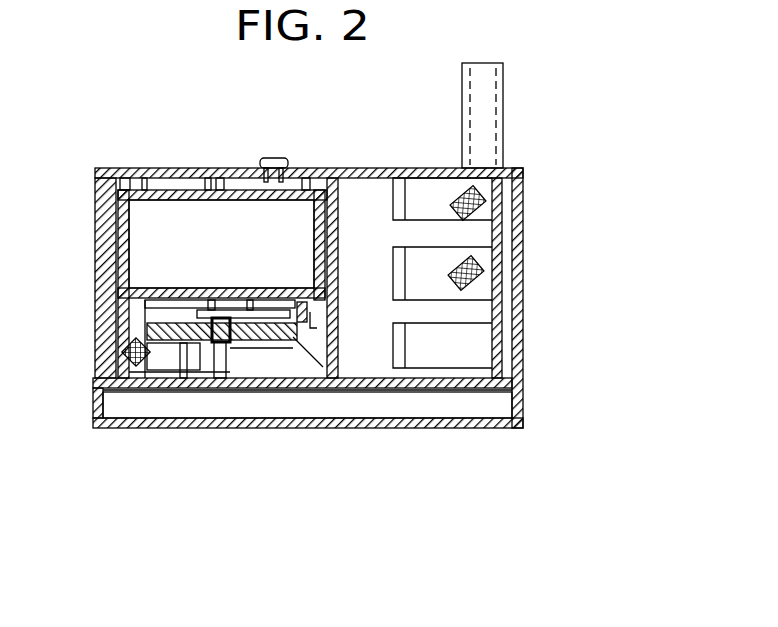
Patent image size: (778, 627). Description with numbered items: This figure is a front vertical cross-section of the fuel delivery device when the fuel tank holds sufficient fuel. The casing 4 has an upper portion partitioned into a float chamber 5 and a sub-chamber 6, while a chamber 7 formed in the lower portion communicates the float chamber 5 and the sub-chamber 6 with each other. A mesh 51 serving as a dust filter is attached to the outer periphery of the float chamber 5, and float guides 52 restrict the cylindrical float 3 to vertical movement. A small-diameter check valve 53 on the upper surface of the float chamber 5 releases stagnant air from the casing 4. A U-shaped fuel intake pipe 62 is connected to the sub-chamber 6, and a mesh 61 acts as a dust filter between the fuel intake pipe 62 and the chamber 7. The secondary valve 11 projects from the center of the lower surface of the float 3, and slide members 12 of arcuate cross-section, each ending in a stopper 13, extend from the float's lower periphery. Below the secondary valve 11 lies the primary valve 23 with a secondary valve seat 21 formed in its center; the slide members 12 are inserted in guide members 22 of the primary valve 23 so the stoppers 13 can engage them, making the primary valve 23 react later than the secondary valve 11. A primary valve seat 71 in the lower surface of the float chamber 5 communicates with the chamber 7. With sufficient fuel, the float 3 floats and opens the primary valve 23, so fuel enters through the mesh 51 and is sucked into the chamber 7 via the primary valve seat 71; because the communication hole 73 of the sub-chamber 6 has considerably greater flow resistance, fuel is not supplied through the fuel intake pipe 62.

The secondary valve 11 is at (217, 288).
The slide members 12 is at (97, 197).
The stopper 13 is at (95, 248).
The float guides 52 is at (232, 172).
The small-diameter check valve 53 is at (273, 158).
The float 3 is at (333, 205).
The fuel intake pipe 62 is at (488, 107).
The sub-chamber 6 is at (500, 163).
The mesh 61 is at (483, 205).
The casing 4 is at (523, 303).
The communication hole 73 is at (423, 377).
The chamber 7 is at (502, 407).
The primary valve seat 71 is at (262, 383).
The mesh 51 is at (93, 390).
The float chamber 5 is at (125, 333).
The secondary valve seat 21 is at (293, 338).
The guide members 22 is at (157, 380).
The primary valve 23 is at (195, 345).